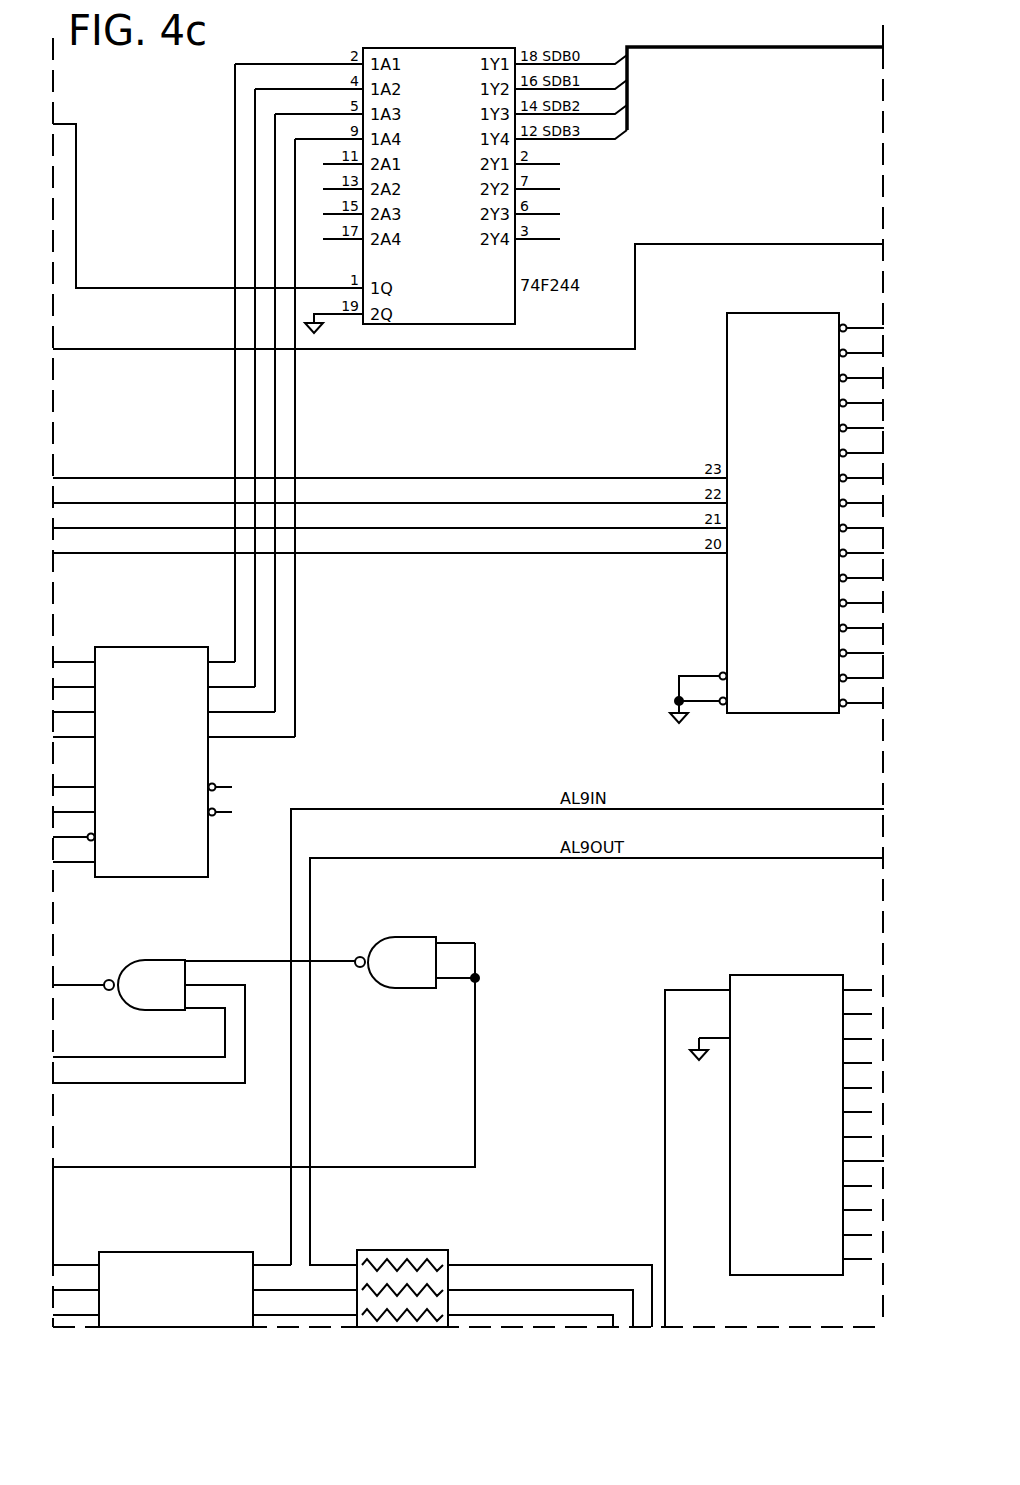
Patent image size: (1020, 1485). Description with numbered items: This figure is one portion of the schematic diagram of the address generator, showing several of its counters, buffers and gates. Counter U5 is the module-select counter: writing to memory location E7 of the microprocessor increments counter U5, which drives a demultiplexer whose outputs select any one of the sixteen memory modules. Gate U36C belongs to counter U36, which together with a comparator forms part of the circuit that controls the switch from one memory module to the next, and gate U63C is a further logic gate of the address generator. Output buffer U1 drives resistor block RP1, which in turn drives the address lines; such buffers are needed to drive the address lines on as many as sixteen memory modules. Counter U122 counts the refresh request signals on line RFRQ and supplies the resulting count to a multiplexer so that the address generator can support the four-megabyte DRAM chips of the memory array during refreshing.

The counter U5 is at (174, 743).
The counter U122 is at (774, 801).
The 74F10 NAND gate U63C is at (204, 1013).
The counter U36C is at (417, 957).
The output buffer U1 is at (205, 1270).
The resistor block RP1 is at (493, 1270).